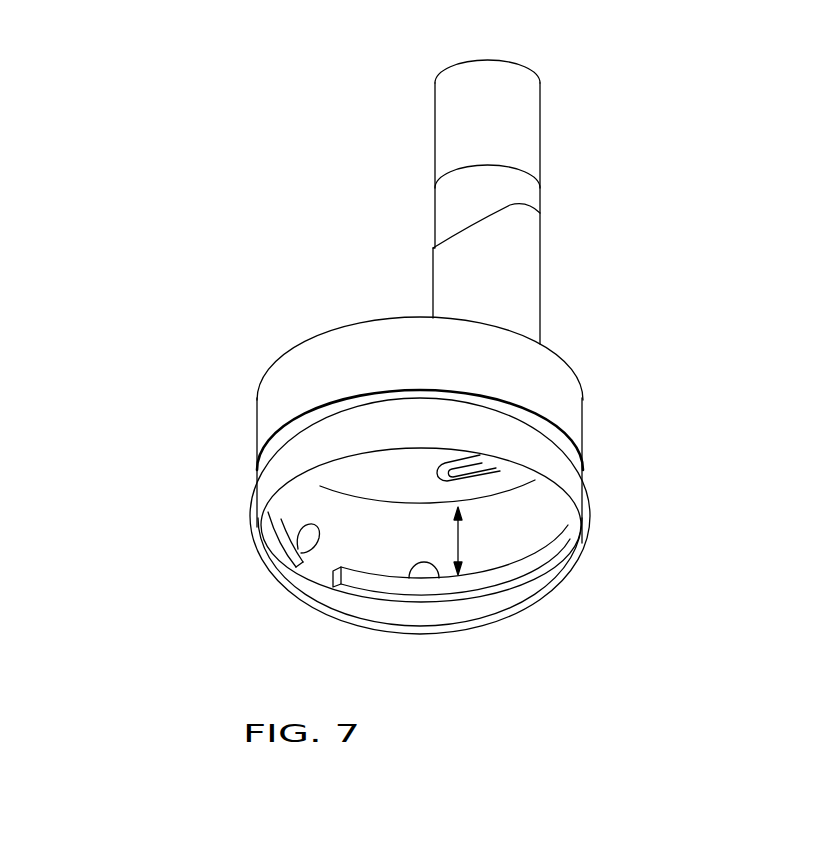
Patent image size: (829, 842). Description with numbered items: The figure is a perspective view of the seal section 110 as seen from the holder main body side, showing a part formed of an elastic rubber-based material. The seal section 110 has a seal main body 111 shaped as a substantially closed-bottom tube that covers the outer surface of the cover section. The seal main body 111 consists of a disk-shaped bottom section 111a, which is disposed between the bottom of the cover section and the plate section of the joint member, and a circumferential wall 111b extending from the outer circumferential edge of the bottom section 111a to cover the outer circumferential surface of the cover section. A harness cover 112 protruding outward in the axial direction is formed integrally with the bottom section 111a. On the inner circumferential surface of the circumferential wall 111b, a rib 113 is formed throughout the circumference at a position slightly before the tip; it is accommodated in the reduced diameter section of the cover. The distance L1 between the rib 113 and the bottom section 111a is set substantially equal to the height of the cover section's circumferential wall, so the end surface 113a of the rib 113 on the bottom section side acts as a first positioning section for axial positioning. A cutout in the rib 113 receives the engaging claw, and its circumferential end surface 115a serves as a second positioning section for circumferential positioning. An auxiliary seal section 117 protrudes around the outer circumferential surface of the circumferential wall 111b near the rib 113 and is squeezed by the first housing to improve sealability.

The seal section 110 is at (414, 375).
The seal main body 111 is at (583, 407).
The bottom section 111a is at (395, 483).
The circumferential wall 111b is at (257, 418).
The harness cover 112 is at (540, 242).
The rib 113 is at (418, 592).
The end surface of the rib 113a is at (440, 573).
The end surface of the cutout section 115a is at (333, 573).
The auxiliary seal section 117 is at (588, 480).
The distance between the rib and the bottom section L1 is at (458, 540).